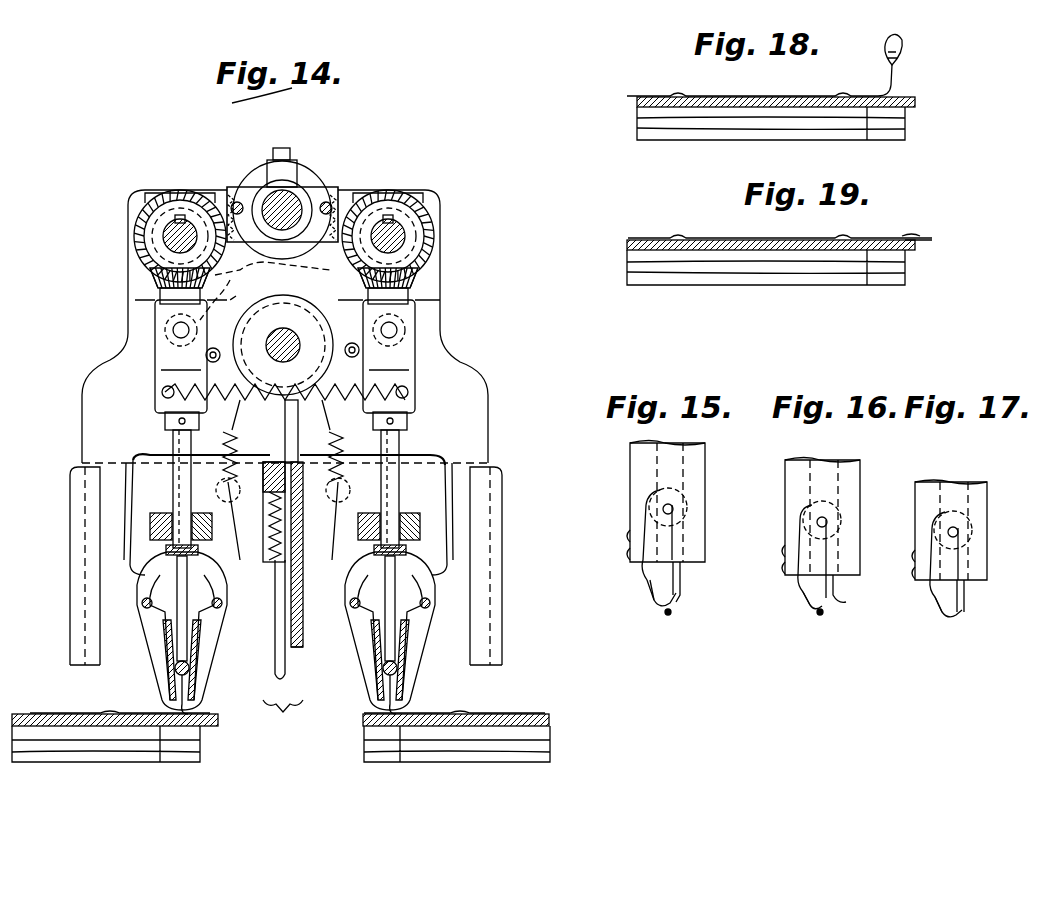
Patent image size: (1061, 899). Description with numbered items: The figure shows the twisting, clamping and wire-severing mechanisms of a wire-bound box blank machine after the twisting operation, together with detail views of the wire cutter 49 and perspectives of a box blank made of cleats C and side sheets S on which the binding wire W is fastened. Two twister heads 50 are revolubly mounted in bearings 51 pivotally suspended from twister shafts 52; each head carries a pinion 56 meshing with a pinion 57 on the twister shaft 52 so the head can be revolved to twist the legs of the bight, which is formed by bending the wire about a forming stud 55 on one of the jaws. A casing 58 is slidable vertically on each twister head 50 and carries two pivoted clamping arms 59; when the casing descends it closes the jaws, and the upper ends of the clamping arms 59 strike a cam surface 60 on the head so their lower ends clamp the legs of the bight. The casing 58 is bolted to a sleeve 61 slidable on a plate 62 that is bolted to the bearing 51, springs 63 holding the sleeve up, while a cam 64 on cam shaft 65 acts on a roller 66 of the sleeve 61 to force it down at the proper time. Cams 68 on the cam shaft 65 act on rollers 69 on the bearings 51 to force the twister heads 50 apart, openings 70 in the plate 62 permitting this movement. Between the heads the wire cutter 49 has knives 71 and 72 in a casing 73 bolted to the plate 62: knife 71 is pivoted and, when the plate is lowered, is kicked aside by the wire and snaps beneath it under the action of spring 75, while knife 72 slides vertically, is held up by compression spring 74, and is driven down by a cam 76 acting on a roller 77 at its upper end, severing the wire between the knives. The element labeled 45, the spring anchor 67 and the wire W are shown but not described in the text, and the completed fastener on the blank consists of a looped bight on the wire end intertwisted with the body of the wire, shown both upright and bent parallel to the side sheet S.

In FIG. 14, the gear wheel 45 is at (298, 196).
In FIG. 14, the wire cutter 49 is at (283, 715).
In FIG. 14, the twister head 50 is at (178, 650).
In FIG. 14, the bearing 51 is at (120, 345).
In FIG. 14, the twister shaft 52 is at (168, 236).
In FIG. 14, the forming stud 55 is at (190, 665).
In FIG. 14, the pinion 56 is at (152, 280).
In FIG. 14, the pinion 57 is at (200, 205).
In FIG. 14, the casing 58 is at (160, 553).
In FIG. 14, the clamping arm 59 is at (152, 625).
In FIG. 14, the cam surface 60 is at (160, 545).
In FIG. 14, the sleeve 61 is at (70, 490).
In FIG. 14, the plate 62 is at (84, 392).
In FIG. 14, the spring 63 is at (285, 258).
In FIG. 14, the cam 64 is at (155, 355).
In FIG. 14, the cam shaft 65 is at (165, 372).
In FIG. 14, the roller 66 is at (336, 480).
In FIG. 14, the spring end 67 is at (165, 388).
In FIG. 14, the cam 68 is at (255, 312).
In FIG. 14, the roller 69 is at (214, 348).
In FIG. 14, the opening 70 is at (130, 470).
In FIG. 14, the cutting knife 71 is at (275, 665).
In FIG. 15, the cutting knife 71 is at (650, 584).
In FIG. 16, the cutting knife 71 is at (800, 600).
In FIG. 17, the cutting knife 71 is at (936, 602).
In FIG. 14, the cutting knife 72 is at (318, 646).
In FIG. 15, the cutting knife 72 is at (682, 568).
In FIG. 16, the cutting knife 72 is at (836, 590).
In FIG. 17, the cutting knife 72 is at (966, 596).
In FIG. 14, the casing 73 is at (306, 565).
In FIG. 15, the casing 73 is at (640, 500).
In FIG. 16, the casing 73 is at (795, 512).
In FIG. 17, the casing 73 is at (928, 518).
In FIG. 14, the compression spring 74 is at (262, 540).
In FIG. 15, the spring 75 is at (643, 565).
In FIG. 16, the spring 75 is at (798, 580).
In FIG. 17, the spring 75 is at (932, 576).
In FIG. 14, the cam 76 is at (355, 360).
In FIG. 14, the roller 77 is at (234, 480).
In FIG. 14, the side sheet S is at (38, 714).
In FIG. 18, the side sheet S is at (636, 102).
In FIG. 19, the side sheet S is at (685, 240).
In FIG. 14, the wire W is at (70, 708).
In FIG. 18, the wire W is at (648, 95).
In FIG. 19, the wire W is at (636, 238).
In FIG. 14, the cleat C is at (80, 748).
In FIG. 18, the cleat C is at (690, 128).
In FIG. 19, the cleat C is at (815, 270).